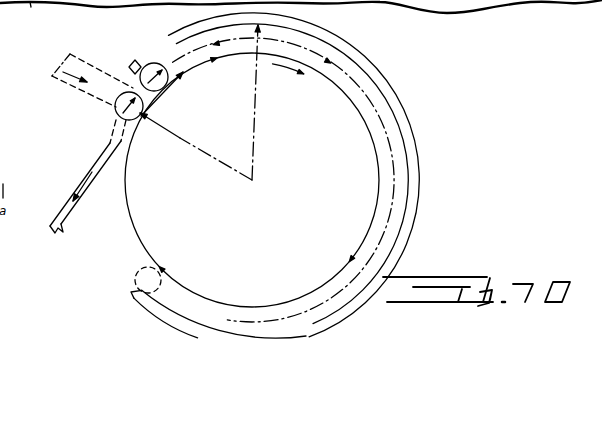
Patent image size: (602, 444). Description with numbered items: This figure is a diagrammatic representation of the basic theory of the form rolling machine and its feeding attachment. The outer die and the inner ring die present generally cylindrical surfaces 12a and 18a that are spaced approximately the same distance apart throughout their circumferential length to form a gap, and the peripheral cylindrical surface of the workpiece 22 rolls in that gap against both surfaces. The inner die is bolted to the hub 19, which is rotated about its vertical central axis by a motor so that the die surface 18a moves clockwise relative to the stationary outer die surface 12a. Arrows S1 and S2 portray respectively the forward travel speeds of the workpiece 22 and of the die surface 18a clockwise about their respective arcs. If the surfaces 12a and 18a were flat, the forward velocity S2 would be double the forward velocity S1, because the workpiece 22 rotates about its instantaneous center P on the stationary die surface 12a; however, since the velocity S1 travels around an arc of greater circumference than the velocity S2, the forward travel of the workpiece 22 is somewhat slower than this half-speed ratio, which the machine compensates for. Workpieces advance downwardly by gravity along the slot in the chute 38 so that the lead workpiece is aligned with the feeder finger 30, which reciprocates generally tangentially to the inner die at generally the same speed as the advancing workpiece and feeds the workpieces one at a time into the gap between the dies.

The cylindrical surface of outer die 12a is at (381, 91).
The cylindrical surface of ring die 18a is at (362, 115).
The workpiece 22 is at (136, 120).
The forward travel speed of workpiece S1 is at (154, 63).
The forward travel speed of die surface S2 is at (176, 84).
The instantaneous center P is at (136, 61).
The chute 38 is at (84, 93).
The feeder finger 30 is at (106, 141).
The hub 19 is at (34, 13).